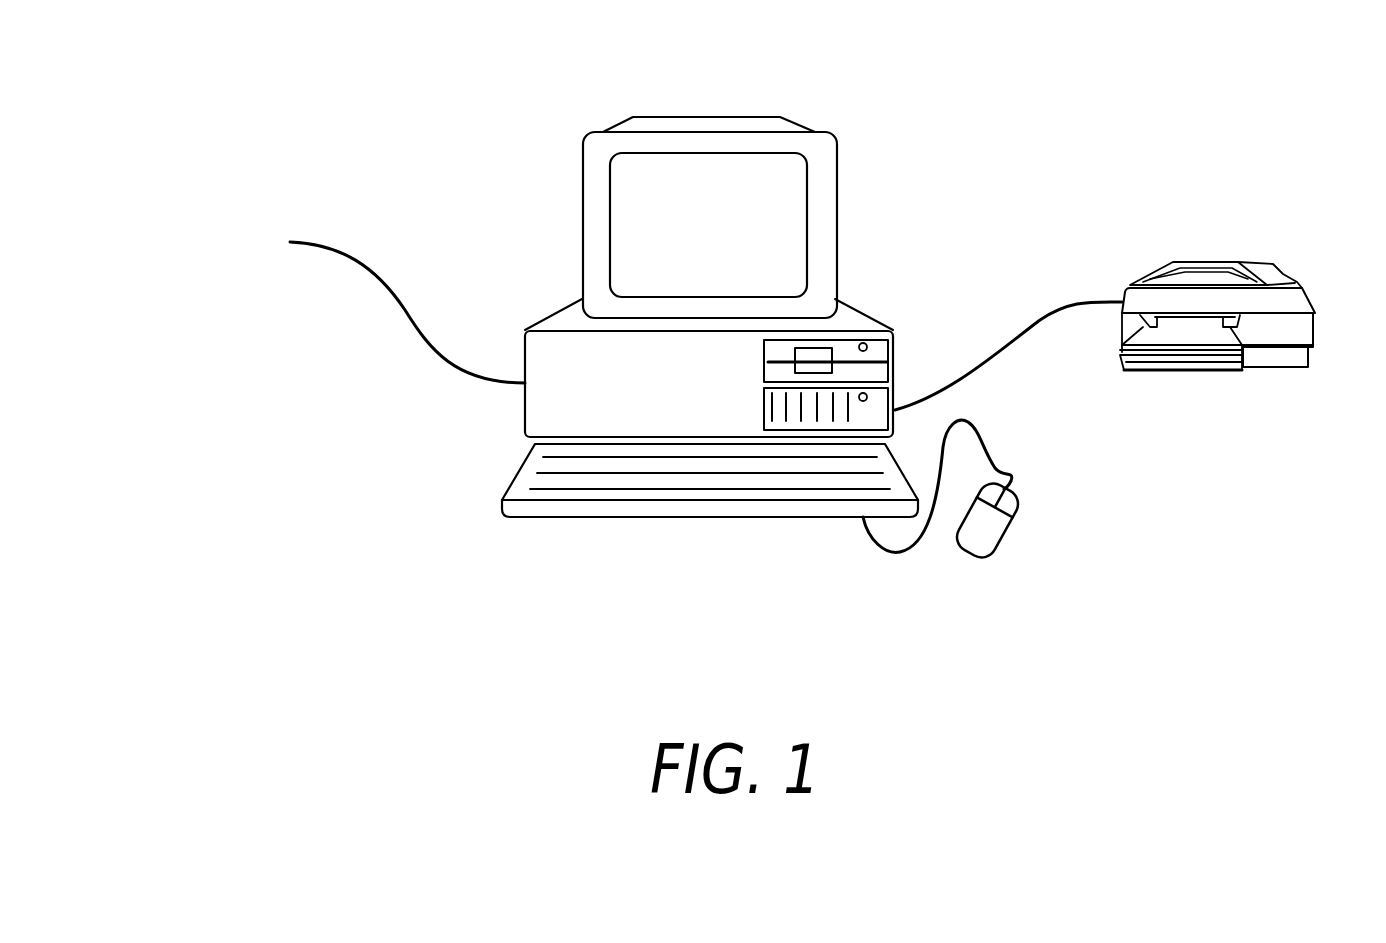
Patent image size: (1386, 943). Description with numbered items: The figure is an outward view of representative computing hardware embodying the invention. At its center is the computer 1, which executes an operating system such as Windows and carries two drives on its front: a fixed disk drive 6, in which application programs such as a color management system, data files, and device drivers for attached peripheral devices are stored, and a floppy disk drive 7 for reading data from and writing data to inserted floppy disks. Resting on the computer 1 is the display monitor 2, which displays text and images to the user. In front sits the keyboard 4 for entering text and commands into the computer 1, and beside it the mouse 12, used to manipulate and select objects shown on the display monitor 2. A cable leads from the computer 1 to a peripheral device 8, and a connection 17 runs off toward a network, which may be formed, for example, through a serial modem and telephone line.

The computer 1 is at (813, 92).
The display monitor 2 is at (588, 205).
The keyboard 4 is at (570, 512).
The fixed disk drive 6 is at (807, 417).
The floppy disk drive 7 is at (887, 372).
The printer 8 is at (1317, 322).
The mouse 12 is at (968, 562).
The connection 17 is at (425, 343).